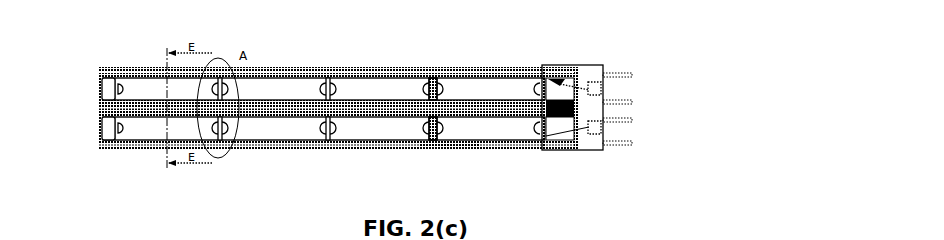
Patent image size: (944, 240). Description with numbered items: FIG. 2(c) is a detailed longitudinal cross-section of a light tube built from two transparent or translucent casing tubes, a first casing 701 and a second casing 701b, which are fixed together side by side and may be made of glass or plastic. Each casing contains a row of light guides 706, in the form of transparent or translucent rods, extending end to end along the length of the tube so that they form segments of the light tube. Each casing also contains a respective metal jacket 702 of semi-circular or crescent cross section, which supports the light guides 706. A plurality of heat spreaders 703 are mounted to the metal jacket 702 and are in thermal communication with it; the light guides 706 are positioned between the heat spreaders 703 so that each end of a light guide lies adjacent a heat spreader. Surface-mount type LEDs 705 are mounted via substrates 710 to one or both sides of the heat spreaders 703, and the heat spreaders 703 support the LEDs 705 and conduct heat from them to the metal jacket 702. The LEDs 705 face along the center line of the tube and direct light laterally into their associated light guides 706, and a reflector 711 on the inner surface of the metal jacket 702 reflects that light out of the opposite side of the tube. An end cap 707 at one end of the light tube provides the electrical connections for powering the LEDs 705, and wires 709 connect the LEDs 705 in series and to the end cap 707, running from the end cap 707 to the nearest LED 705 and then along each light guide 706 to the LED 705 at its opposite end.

The casing 701 is at (118, 67).
The second casing 701b is at (505, 146).
The metal jacket 702 is at (447, 141).
The heat spreader 703 is at (327, 78).
The LED 705 is at (418, 133).
The light guide 706 is at (367, 92).
The end cap 707 is at (98, 90).
The wires 709 is at (571, 73).
The substrate 710 is at (440, 77).
The reflector 711 is at (636, 77).